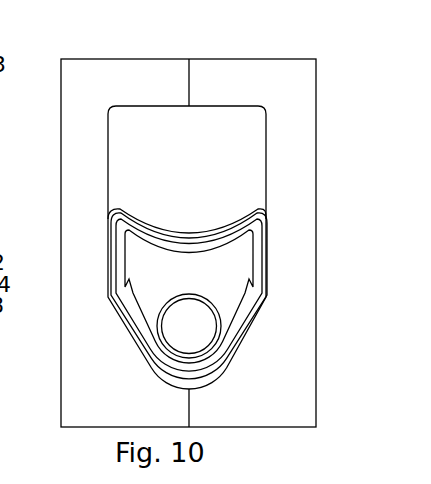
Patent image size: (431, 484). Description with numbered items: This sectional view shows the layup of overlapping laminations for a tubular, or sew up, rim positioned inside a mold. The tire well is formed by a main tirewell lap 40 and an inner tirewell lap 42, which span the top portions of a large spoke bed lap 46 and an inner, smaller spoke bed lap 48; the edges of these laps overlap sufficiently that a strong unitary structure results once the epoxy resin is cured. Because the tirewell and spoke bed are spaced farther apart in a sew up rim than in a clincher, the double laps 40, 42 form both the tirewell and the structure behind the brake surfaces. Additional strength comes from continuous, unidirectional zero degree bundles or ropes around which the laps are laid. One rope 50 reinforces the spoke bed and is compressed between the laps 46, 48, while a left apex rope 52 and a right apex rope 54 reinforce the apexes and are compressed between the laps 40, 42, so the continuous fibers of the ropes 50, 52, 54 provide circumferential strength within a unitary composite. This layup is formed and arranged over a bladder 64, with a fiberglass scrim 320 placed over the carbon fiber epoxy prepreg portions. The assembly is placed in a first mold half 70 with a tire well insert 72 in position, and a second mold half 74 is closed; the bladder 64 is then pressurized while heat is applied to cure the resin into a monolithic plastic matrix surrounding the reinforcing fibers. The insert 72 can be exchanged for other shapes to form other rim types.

The main tirewell lap 40 is at (266, 259).
The inner tirewell lap 42 is at (265, 238).
The large spoke bed lap 46 is at (226, 375).
The inner, smaller spoke bed lap 48 is at (233, 324).
The rope 50 is at (160, 387).
The left apex rope 52 is at (123, 221).
The right apex rope 54 is at (265, 214).
The bladder 64 is at (179, 297).
The first mold half 70 is at (138, 144).
The tire well insert 72 is at (187, 133).
The second mold half 74 is at (233, 143).
The fiberglass scrim 320 is at (224, 379).